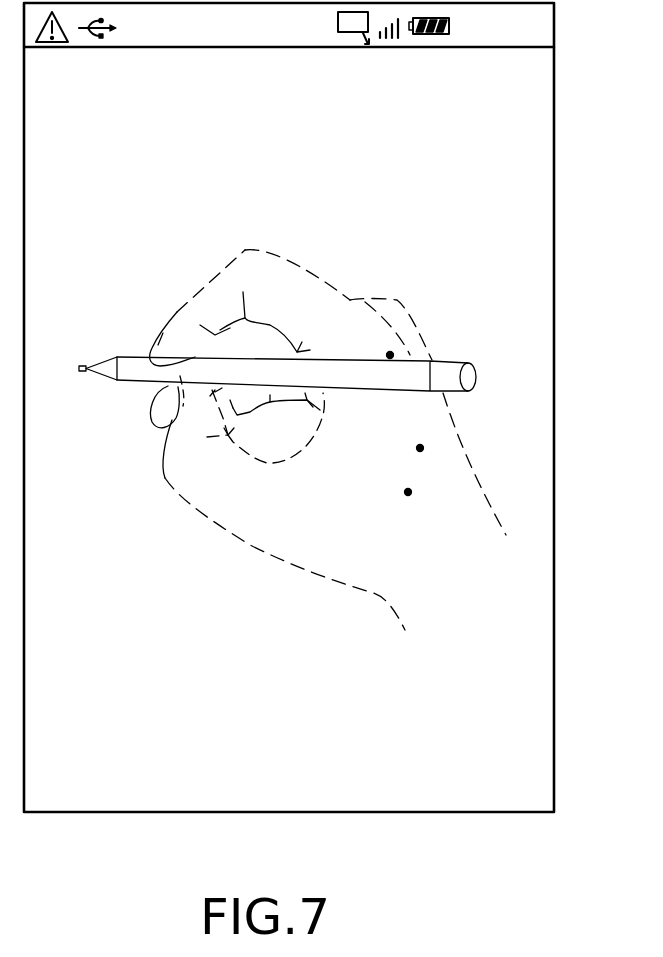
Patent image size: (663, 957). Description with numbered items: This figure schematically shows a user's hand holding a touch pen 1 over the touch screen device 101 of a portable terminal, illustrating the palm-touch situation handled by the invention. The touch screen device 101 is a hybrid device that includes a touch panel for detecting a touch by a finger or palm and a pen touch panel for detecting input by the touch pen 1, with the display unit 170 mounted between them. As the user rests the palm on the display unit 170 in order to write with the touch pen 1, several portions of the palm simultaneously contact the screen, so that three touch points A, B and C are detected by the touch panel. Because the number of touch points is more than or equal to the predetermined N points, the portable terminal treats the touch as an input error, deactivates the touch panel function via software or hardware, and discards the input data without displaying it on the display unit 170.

The touch pen 1 is at (137, 383).
The touch screen device 101 is at (554, 234).
The display unit 170 is at (447, 172).
The touch point A is at (390, 355).
The touch point B is at (420, 448).
The touch point C is at (408, 492).